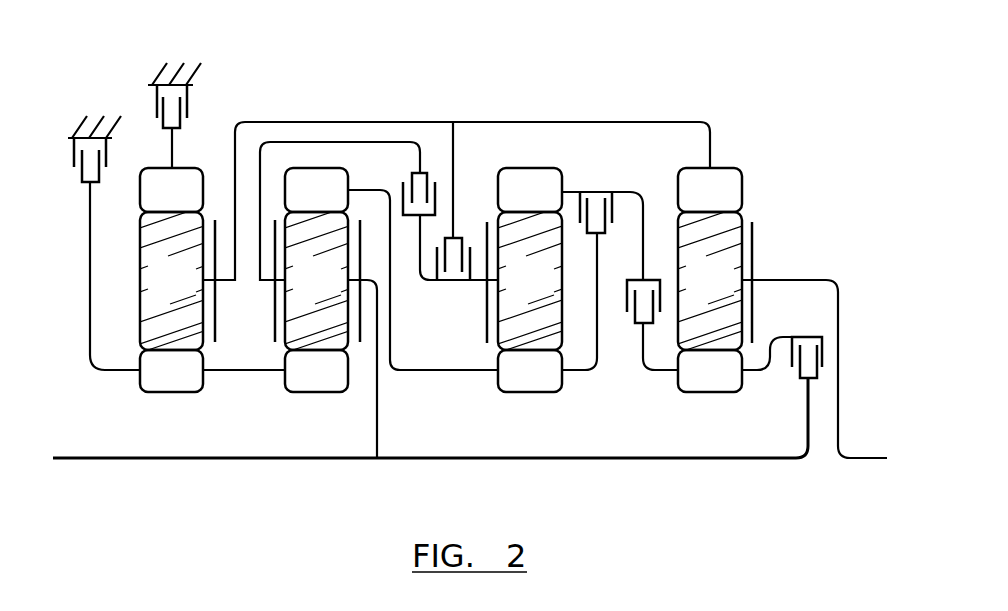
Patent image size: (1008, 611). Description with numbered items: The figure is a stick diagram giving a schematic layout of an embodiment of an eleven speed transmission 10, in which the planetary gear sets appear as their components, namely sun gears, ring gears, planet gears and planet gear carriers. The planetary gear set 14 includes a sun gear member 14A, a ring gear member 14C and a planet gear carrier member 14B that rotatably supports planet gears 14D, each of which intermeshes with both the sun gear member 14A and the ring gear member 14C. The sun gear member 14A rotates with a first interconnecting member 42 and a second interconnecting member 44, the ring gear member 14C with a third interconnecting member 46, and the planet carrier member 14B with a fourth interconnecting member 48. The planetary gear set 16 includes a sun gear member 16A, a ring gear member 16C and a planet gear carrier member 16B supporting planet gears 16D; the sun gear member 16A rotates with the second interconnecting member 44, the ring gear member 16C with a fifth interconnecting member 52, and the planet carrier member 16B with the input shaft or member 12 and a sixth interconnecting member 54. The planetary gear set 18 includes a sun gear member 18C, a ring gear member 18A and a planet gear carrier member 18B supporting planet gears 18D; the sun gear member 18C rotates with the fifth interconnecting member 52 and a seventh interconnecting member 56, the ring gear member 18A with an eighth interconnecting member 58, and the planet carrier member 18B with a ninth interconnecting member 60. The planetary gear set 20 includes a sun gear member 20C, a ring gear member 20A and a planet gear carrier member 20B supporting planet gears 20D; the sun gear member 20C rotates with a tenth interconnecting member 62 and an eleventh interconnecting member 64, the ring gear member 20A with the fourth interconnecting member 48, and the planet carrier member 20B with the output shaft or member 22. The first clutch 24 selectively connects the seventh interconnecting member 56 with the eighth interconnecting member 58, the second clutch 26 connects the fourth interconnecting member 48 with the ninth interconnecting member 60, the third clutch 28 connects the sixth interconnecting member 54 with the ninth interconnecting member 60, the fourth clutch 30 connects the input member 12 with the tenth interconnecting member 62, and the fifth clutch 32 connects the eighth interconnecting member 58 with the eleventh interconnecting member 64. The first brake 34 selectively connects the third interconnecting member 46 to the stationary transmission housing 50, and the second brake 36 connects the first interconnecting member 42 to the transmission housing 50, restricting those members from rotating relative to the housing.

The eleven speed transmission 10 is at (775, 98).
The input shaft or member 12 is at (72, 460).
The planetary gear set 14 is at (205, 336).
The sun gear member 14A is at (151, 384).
The planet gear carrier member 14B is at (217, 308).
The ring gear member 14C is at (151, 203).
The planet gears 14D is at (151, 292).
The planetary gear set 16 is at (337, 326).
The sun gear member 16A is at (296, 384).
The planet gear carrier member 16B is at (364, 212).
The ring gear member 16C is at (296, 203).
The planet gears 16D is at (296, 292).
The planetary gear set 18 is at (494, 336).
The ring gear member 18A is at (509, 203).
The planet gear carrier member 18B is at (486, 318).
The sun gear member 18C is at (509, 384).
The planet gears 18D is at (509, 292).
The planetary gear set 20 is at (743, 336).
The ring gear member 20A is at (689, 203).
The planet gear carrier member 20B is at (755, 248).
The sun gear member 20C is at (689, 384).
The planet gears 20D is at (689, 292).
The output shaft or member 22 is at (875, 460).
The first clutch 24 is at (614, 200).
The second clutch 26 is at (471, 256).
The third clutch 28 is at (438, 186).
The fourth clutch 30 is at (824, 362).
The fifth clutch 32 is at (627, 293).
The first brake 34 is at (190, 103).
The second brake 36 is at (74, 168).
The first shaft or interconnecting member 42 is at (89, 307).
The second shaft or interconnecting member 44 is at (251, 372).
The third shaft or interconnecting member 46 is at (171, 148).
The fourth shaft or interconnecting member 48 is at (314, 121).
The transmission housing 50 is at (95, 128).
The fifth shaft or interconnecting member 52 is at (431, 372).
The sixth shaft or interconnecting member 54 is at (256, 175).
The seventh shaft or interconnecting member 56 is at (598, 348).
The eighth shaft or interconnecting member 58 is at (644, 250).
The ninth shaft or interconnecting member 60 is at (418, 250).
The tenth shaft or interconnecting member 62 is at (748, 373).
The eleventh shaft or interconnecting member 64 is at (666, 373).